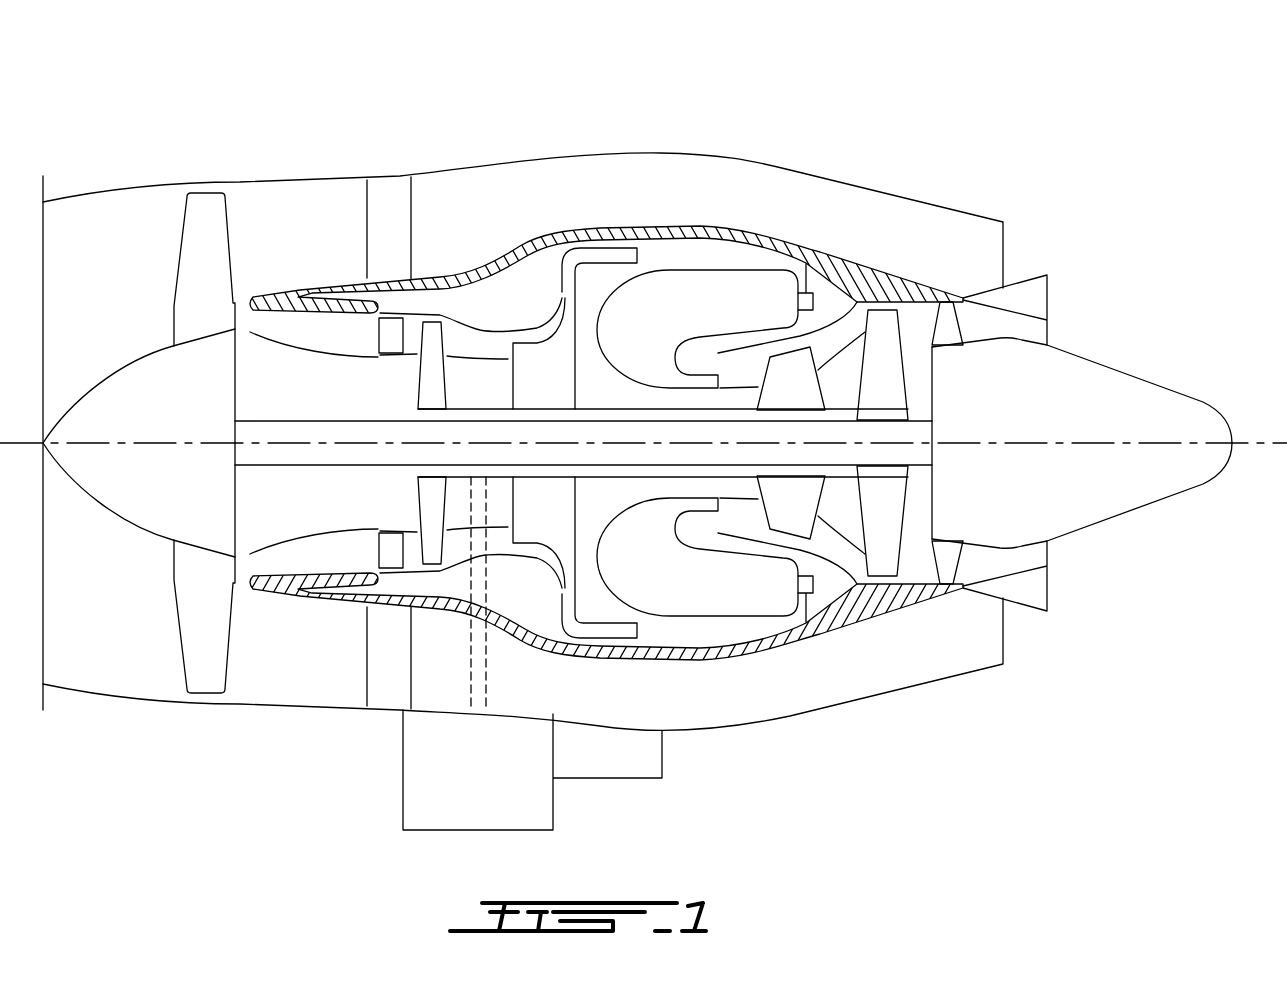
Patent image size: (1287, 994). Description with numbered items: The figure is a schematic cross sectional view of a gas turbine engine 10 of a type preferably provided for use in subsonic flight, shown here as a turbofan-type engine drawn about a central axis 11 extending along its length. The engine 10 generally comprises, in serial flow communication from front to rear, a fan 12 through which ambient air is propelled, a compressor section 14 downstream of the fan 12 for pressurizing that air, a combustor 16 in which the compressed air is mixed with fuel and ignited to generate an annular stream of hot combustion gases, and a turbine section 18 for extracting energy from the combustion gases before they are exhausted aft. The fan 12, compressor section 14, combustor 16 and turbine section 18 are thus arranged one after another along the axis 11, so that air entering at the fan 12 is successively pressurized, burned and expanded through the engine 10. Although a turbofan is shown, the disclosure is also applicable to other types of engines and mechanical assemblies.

The gas turbine engine 10 is at (895, 149).
The engine central longitudinal axis 11 is at (1273, 443).
The fan 12 is at (198, 603).
The compressor section 14 is at (468, 337).
The combustor 16 is at (698, 293).
The turbine section 18 is at (838, 513).